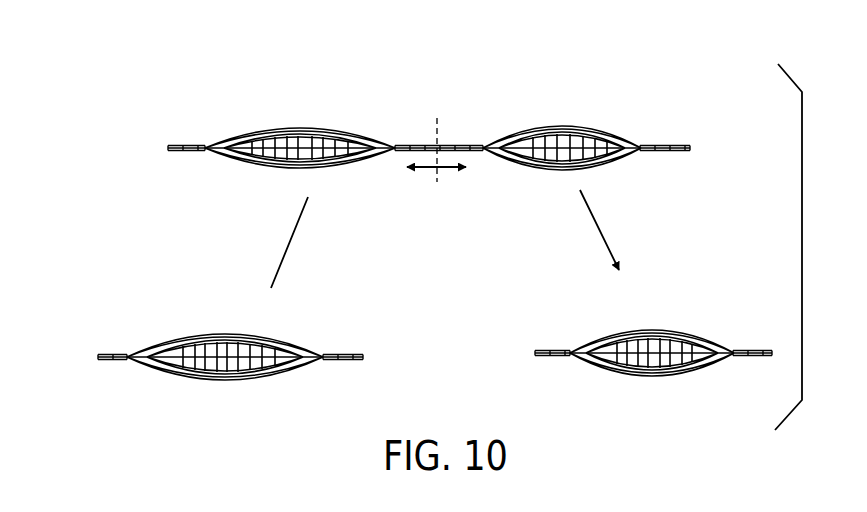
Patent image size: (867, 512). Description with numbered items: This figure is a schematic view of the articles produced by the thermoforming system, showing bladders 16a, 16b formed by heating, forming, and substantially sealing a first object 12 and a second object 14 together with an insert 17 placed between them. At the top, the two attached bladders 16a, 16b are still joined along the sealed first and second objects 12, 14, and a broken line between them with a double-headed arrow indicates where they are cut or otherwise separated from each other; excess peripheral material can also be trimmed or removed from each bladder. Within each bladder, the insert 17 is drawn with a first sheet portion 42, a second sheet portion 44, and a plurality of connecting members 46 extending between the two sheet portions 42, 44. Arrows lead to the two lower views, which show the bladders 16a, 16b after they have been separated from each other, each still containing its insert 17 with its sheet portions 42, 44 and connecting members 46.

The first object 12 is at (673, 147).
The second object 14 is at (673, 151).
The bladder 16a is at (346, 121).
The bladder 16b is at (535, 124).
The insert 17 is at (356, 145).
The first sheet portion 42 is at (268, 131).
The second sheet portion 44 is at (268, 166).
The connecting members 46 is at (303, 141).